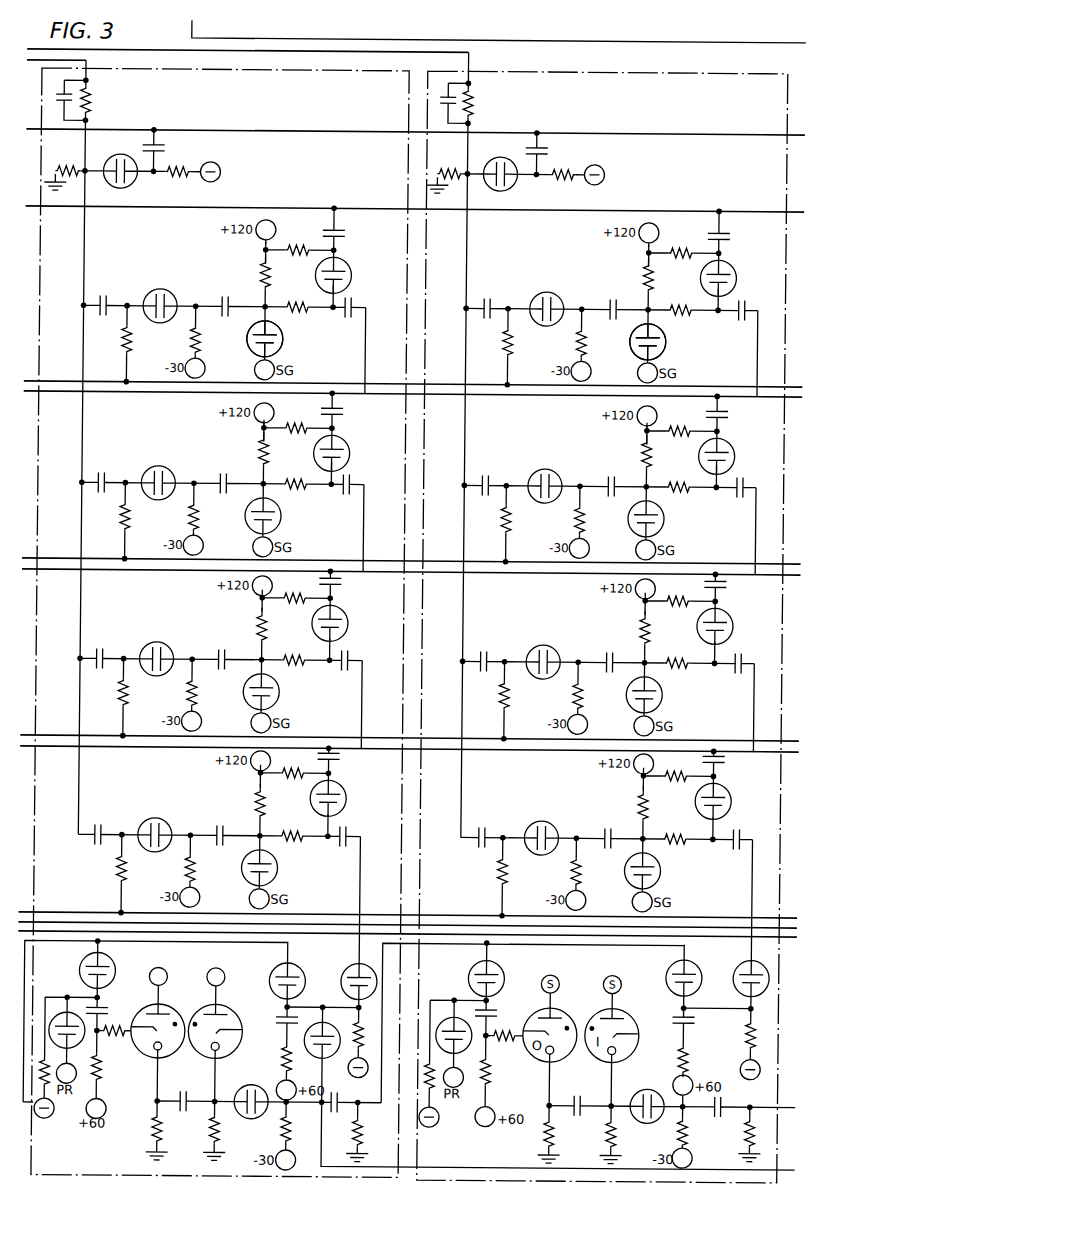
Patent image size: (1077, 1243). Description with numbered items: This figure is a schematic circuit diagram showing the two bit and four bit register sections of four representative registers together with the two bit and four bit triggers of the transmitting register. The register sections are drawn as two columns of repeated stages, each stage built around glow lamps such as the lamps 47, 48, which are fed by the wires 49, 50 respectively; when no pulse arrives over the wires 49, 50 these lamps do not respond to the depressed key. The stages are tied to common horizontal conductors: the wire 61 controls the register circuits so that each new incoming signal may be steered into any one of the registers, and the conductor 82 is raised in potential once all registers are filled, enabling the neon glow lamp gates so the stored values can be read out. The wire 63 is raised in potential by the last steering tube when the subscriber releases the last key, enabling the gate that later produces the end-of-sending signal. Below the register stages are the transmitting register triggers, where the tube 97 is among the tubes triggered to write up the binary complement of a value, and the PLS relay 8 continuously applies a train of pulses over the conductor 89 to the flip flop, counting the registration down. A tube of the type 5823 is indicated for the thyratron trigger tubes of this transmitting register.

The PLS relay 8 is at (492, 30).
The conductor 82 is at (199, 213).
The wire 49 is at (81, 280).
The wire 50 is at (465, 275).
The lamp 47 is at (252, 345).
The lamp 48 is at (630, 348).
The wire 61 is at (384, 562).
The wire 63 is at (337, 935).
The conductor 89 is at (717, 940).
The tube 97 is at (207, 1012).
The thyratron tube type 5823 is at (154, 1061).